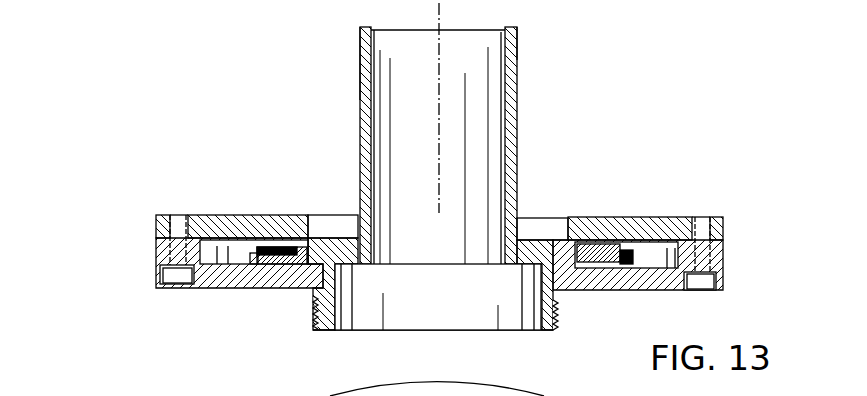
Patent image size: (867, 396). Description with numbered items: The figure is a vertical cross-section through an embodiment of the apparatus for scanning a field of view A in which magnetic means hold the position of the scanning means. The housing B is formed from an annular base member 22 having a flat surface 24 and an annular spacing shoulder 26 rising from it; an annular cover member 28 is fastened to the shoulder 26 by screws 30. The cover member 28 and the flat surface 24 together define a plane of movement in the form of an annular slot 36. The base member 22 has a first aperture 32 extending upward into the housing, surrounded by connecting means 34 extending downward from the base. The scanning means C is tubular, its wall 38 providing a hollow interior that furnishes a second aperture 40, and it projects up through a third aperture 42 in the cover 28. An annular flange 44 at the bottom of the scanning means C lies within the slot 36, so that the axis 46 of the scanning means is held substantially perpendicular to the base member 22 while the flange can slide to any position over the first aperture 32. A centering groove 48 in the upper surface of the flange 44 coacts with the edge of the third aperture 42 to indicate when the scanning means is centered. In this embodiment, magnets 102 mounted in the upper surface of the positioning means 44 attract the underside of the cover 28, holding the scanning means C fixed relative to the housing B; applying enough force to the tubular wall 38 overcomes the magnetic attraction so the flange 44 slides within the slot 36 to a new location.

The axis 46 is at (441, 21).
The tubular wall 38 is at (517, 90).
The third aperture 42 is at (308, 222).
The annular flange 44 is at (537, 262).
The annular cover member 28 is at (643, 233).
The annular spacing shoulder 26 is at (723, 262).
The screws 30 is at (700, 289).
The flat surface 24 is at (642, 264).
The magnetic means 102 is at (270, 250).
The annular base member 22 is at (233, 250).
The annular slot 36 is at (225, 250).
The centering groove 48 is at (312, 242).
The first aperture 32 is at (338, 308).
The connecting means 34 is at (558, 322).
The second aperture 40 is at (372, 240).
The apparatus for scanning a field of view A is at (350, 82).
The housing B is at (156, 243).
The scanning means C is at (517, 53).